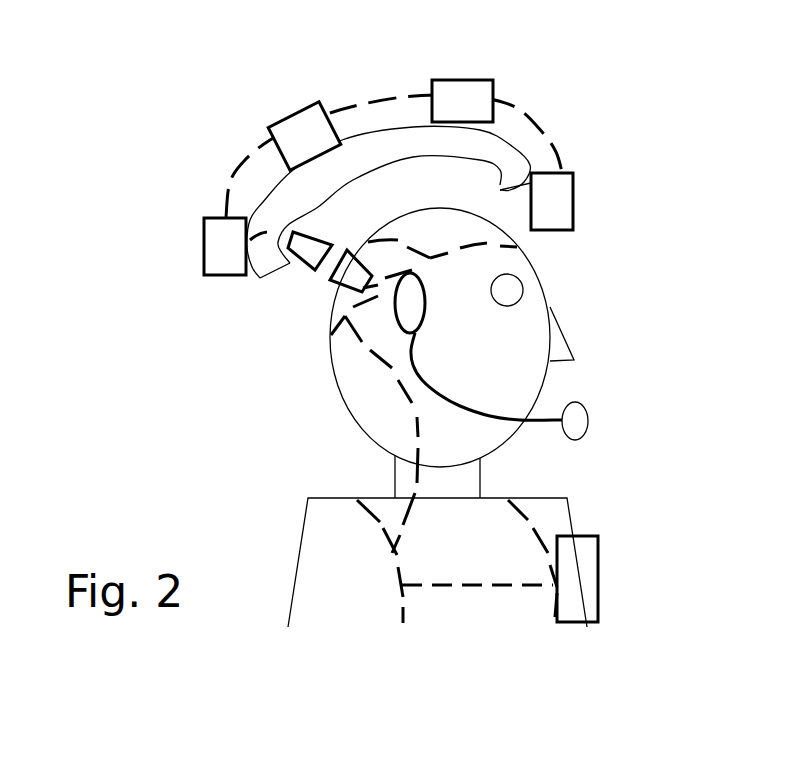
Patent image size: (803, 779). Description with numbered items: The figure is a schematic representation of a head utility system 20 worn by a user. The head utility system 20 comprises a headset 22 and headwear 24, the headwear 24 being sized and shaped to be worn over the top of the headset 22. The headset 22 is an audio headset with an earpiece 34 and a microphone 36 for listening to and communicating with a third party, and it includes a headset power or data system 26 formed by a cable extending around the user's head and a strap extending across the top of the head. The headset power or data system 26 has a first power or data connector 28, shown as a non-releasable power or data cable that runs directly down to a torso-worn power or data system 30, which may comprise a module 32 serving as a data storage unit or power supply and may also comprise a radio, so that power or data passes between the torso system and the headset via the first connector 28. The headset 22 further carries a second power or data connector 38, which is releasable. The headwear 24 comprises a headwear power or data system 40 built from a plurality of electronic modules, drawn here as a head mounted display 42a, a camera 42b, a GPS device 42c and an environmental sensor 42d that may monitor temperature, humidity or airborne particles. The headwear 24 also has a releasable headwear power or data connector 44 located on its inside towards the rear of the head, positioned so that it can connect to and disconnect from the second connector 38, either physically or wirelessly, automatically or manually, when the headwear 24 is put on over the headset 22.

The head utility system 20 is at (175, 337).
The headset 22 is at (222, 387).
The headwear 24 is at (195, 163).
The headset power or data system 26 is at (470, 247).
The first power or data connector 28 is at (340, 348).
The torso-worn power or data system 30 is at (402, 577).
The module 32 is at (598, 570).
The earpiece 34 is at (427, 310).
The microphone 36 is at (590, 417).
The second power or data connector 38 is at (333, 280).
The headwear power or data system 40 is at (388, 97).
The head mounted display 42a is at (545, 200).
The camera 42b is at (462, 101).
The GPS device 42c is at (304, 136).
The environmental sensor 42d is at (228, 257).
The headwear power or data connector 44 is at (302, 265).